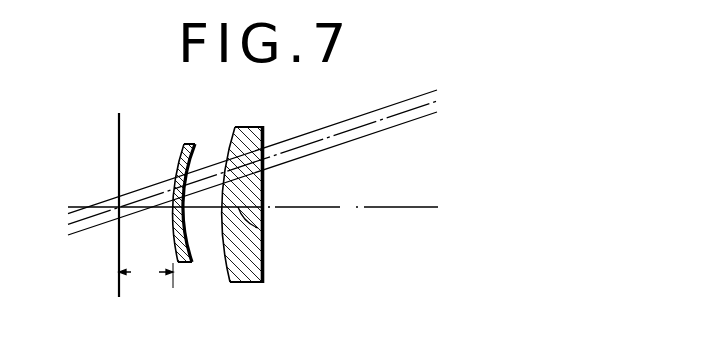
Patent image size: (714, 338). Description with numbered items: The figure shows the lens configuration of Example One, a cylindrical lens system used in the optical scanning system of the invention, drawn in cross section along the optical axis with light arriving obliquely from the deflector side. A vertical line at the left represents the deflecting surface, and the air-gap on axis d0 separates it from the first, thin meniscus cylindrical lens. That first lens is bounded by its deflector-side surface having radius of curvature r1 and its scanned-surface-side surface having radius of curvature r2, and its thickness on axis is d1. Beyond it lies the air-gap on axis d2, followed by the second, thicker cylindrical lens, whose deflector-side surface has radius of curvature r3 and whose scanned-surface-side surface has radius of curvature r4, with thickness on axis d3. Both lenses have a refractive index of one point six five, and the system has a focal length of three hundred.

The radius of curvature of the cylindrical lens on the deflector side r1 is at (180, 160).
The radius of curvature of the cylindrical lens on the scanned-surface side r2 is at (193, 158).
The radius of curvature of the second cylindrical lens on the deflector side r3 is at (233, 148).
The radius of curvature of the second cylindrical lens on the scanned-surface side r4 is at (264, 136).
The air-gap on axis between the deflecting surface and the cylindrical lens d0 is at (146, 274).
The thickness on axis of the cylindrical lens d1 is at (172, 212).
The air-gap on axis between the cylindrical lenses d2 is at (202, 212).
The thickness on axis of the second cylindrical lens d3 is at (258, 228).